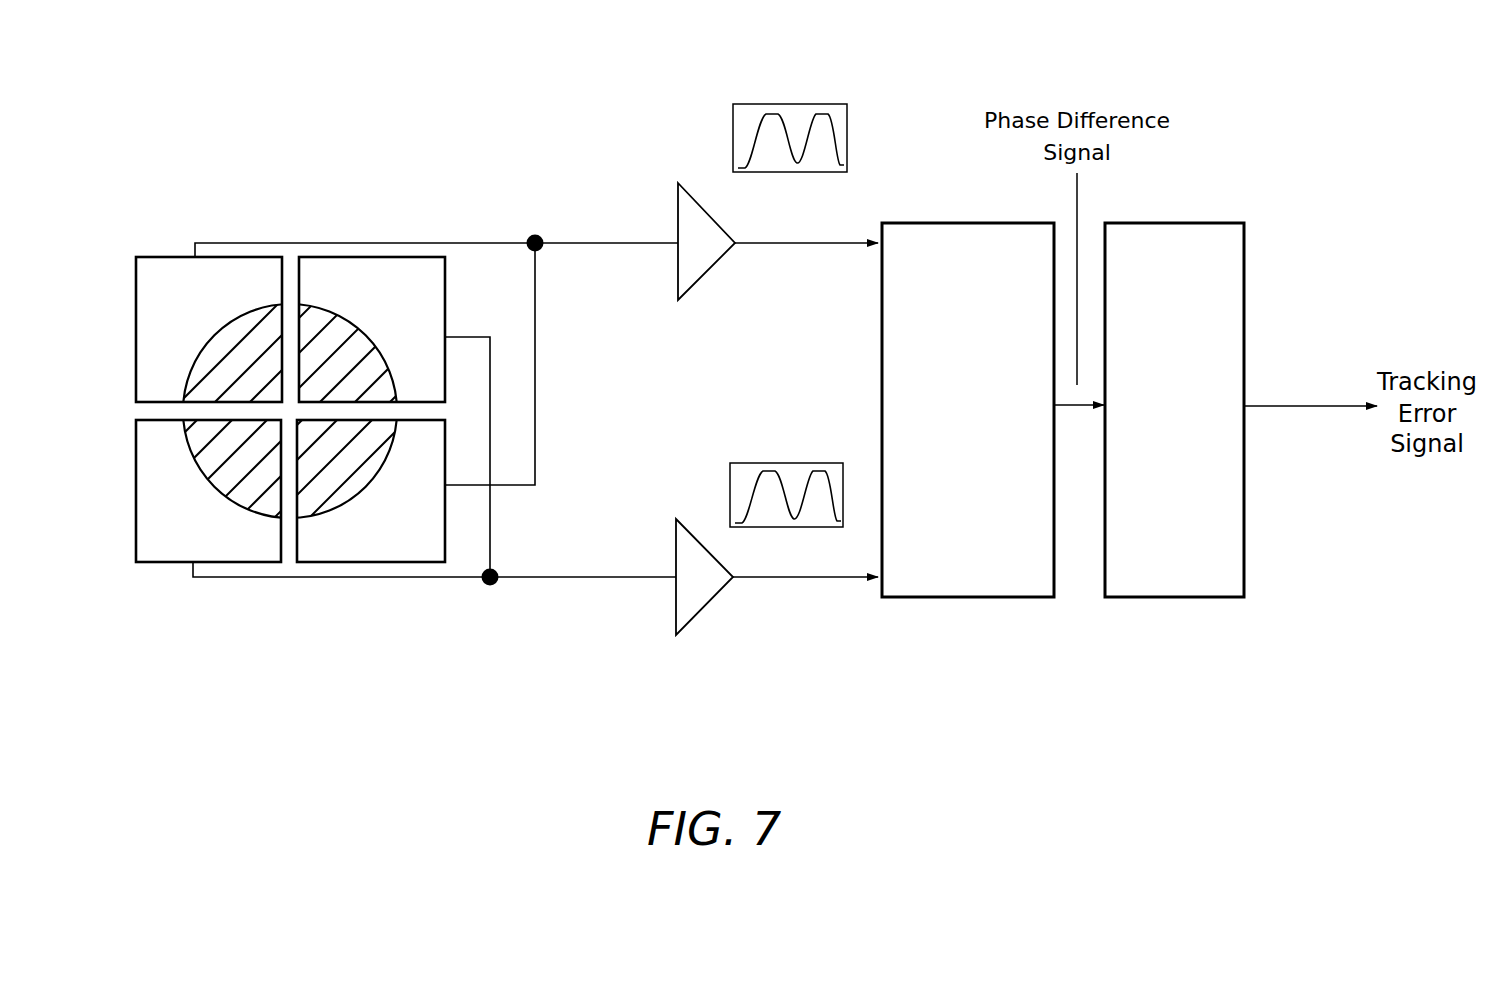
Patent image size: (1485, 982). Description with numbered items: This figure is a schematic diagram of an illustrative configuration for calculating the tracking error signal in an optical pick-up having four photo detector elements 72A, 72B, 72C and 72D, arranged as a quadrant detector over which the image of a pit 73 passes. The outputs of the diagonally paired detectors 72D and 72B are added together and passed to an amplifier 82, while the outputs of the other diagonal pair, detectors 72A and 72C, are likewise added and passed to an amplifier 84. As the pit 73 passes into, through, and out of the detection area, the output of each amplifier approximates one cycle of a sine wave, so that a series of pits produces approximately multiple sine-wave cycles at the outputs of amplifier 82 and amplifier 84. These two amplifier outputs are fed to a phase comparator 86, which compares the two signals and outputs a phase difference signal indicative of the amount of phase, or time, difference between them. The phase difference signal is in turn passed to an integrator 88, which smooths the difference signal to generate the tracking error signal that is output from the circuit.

The photo detector element 72A is at (387, 257).
The photo detector element 72B is at (362, 565).
The photo detector element 72C is at (162, 565).
The photo detector element 72D is at (167, 256).
The pit 73 is at (257, 305).
The amplifier 82 is at (678, 180).
The amplifier 84 is at (705, 612).
The phase comparator 86 is at (962, 600).
The integrator 88 is at (1167, 600).